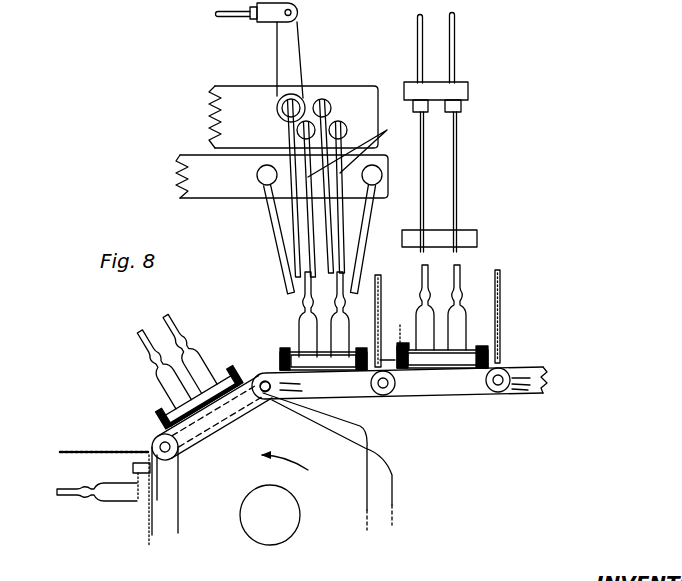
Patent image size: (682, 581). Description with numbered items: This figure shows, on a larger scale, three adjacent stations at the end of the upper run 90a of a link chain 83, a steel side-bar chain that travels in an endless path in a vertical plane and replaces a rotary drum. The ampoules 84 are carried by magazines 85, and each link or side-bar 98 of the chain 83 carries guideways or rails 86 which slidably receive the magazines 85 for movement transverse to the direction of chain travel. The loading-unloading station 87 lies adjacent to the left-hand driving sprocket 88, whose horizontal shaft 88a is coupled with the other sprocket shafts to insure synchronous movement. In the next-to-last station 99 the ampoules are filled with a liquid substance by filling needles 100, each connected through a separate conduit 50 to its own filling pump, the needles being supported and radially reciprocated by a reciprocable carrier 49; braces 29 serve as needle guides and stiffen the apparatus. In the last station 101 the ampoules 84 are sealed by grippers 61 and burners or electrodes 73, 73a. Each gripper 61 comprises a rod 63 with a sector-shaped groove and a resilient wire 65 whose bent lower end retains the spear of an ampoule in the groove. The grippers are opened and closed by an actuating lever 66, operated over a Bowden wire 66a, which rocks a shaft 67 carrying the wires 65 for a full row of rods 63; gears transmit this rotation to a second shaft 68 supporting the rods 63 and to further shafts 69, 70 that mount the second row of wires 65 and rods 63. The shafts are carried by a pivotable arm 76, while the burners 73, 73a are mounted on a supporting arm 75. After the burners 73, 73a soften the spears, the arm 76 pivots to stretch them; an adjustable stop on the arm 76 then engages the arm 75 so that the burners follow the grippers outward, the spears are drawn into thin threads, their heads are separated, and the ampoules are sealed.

The needle guides or braces 29 is at (465, 237).
The reciprocable carrier 49 is at (462, 92).
The conduit 50 is at (452, 45).
The grippers or tongs 61 is at (326, 248).
The rod 63 is at (361, 149).
The resilient wire 65 is at (296, 216).
The actuating lever 66 is at (297, 40).
The Bowden wire 66a is at (231, 17).
The shaft 67 is at (278, 109).
The second shaft 68 is at (297, 134).
The shaft 69 is at (331, 105).
The shaft 70 is at (339, 128).
The burner or electrode 73 is at (364, 288).
The burner or electrode 73a is at (281, 275).
The supporting arm 75 is at (190, 157).
The arm 76 is at (238, 96).
The link chain 83 is at (528, 387).
The ampoules 84 is at (457, 315).
The magazines 85 is at (446, 356).
The guideways or rails 86 is at (400, 345).
The loading-unloading station 87 is at (153, 329).
The left-hand driving sprocket 88 is at (358, 492).
The horizontal shaft 88a is at (290, 516).
The upper run 90a is at (533, 362).
The link or side-bar 98 is at (410, 386).
The next-to-last station 99 is at (490, 265).
The filling needles 100 is at (453, 175).
The last station 101 is at (372, 273).